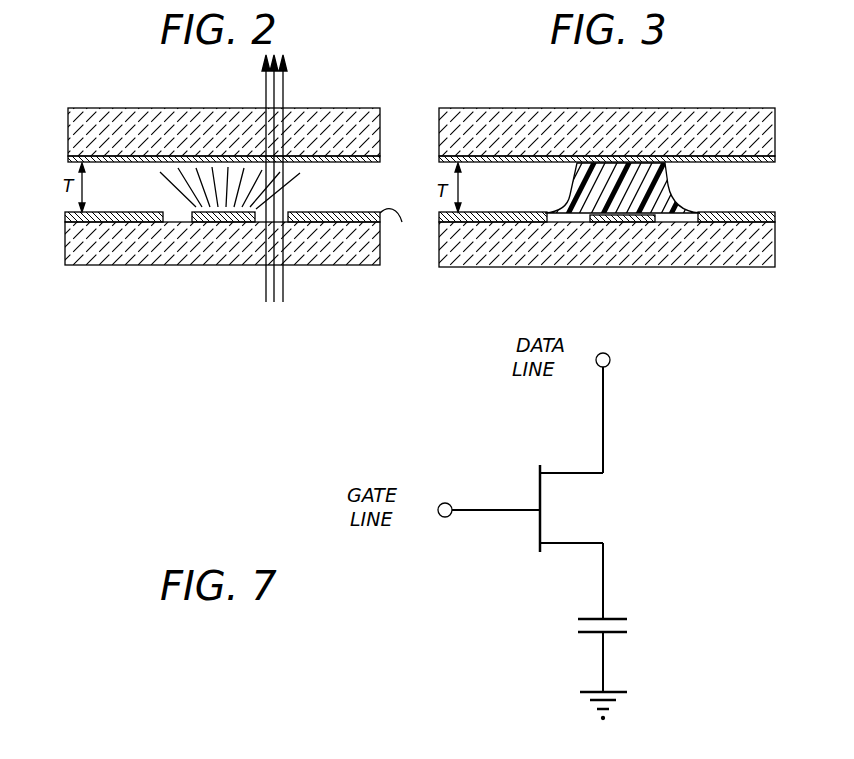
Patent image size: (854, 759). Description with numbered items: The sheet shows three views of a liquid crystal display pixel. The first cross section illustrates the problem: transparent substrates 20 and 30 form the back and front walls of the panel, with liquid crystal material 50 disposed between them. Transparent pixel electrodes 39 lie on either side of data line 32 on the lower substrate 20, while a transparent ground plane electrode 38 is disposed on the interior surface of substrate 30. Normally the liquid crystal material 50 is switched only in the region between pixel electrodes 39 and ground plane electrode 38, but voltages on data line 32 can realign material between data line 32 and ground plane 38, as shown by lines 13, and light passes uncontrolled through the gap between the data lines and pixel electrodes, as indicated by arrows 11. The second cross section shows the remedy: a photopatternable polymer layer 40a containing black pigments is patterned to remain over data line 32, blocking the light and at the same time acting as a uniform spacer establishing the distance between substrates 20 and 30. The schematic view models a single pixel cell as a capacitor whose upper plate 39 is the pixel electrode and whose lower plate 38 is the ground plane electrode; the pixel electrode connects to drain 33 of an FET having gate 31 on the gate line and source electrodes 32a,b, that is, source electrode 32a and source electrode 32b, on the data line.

In FIG. 2, the arrows 11 is at (266, 83).
In FIG. 2, the lines 13 is at (203, 175).
In FIG. 2, the transparent substrate 20 is at (136, 249).
In FIG. 3, the transparent substrate 20 is at (521, 253).
In FIG. 2, the transparent substrate 30 is at (140, 146).
In FIG. 3, the transparent substrate 30 is at (524, 146).
In FIG. 2, the data line 32 is at (226, 222).
In FIG. 3, the data line 32 is at (604, 223).
In FIG. 2, the ground plane electrode 38 is at (68, 157).
In FIG. 3, the ground plane electrode 38 is at (439, 157).
In FIG. 7, the ground plane electrode 38 is at (612, 634).
In FIG. 2, the pixel electrodes 39 is at (65, 213).
In FIG. 3, the pixel electrodes 39 is at (439, 213).
In FIG. 7, the pixel electrodes 39 is at (615, 618).
In FIG. 3, the photopatternable polymer layer 40a is at (602, 162).
In FIG. 2, the liquid crystal material 50 is at (134, 199).
In FIG. 3, the liquid crystal material 50 is at (516, 201).
In FIG. 7, the gate 31 is at (490, 512).
In FIG. 7, the drain 33 is at (568, 546).
In FIG. 7, the source electrodes 32a,b is at (615, 413).
In FIG. 7, the source electrode 32a is at (615, 413).
In FIG. 7, the source electrode 32b is at (605, 420).